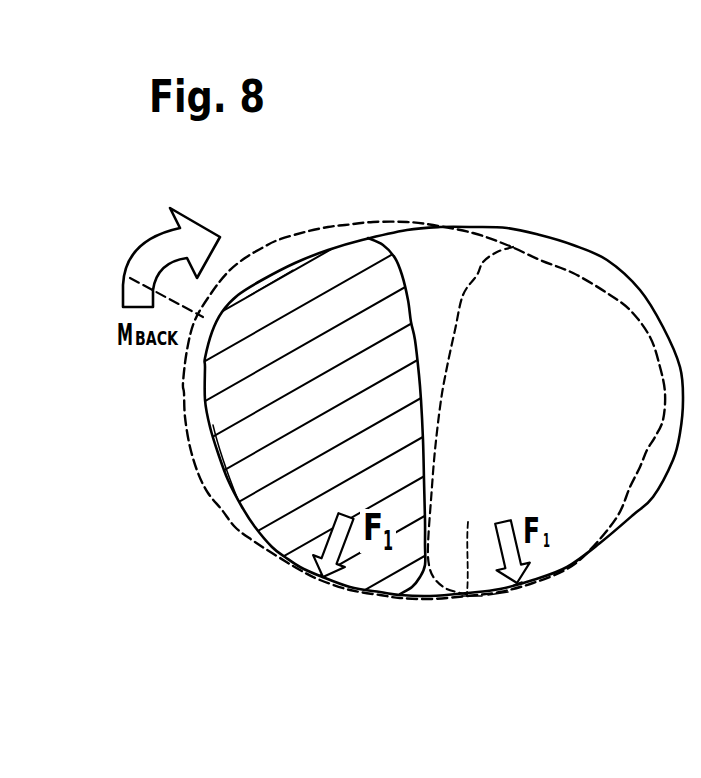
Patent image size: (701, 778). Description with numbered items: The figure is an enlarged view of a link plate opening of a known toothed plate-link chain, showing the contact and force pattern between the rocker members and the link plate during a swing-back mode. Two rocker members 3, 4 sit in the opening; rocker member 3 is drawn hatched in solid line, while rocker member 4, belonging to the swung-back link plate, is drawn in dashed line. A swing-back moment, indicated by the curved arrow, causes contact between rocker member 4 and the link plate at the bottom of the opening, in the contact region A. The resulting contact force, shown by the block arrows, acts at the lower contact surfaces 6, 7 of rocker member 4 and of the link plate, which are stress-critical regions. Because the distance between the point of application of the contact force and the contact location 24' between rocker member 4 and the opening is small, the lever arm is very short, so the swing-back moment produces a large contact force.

The rocker member 3 is at (257, 474).
The rocker member 4 is at (562, 300).
The lower contact surface 6 is at (468, 546).
The contact location 24' is at (472, 640).
The lower contact surface 7 is at (497, 597).
The contact region A is at (518, 587).